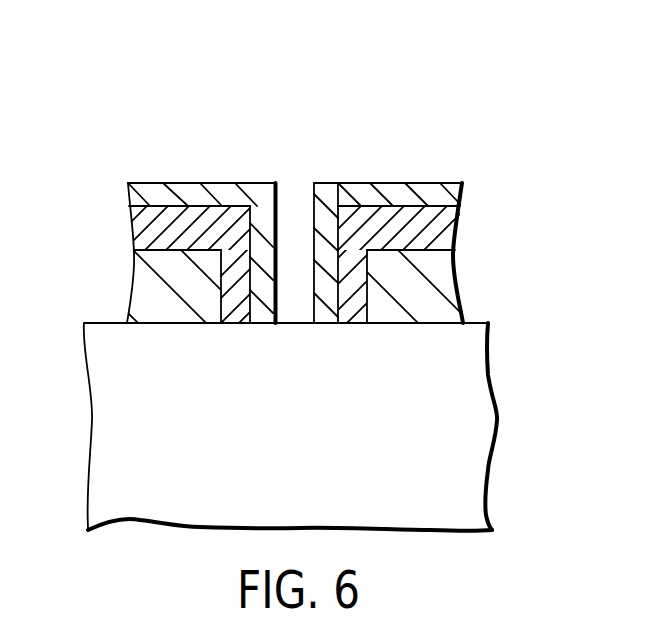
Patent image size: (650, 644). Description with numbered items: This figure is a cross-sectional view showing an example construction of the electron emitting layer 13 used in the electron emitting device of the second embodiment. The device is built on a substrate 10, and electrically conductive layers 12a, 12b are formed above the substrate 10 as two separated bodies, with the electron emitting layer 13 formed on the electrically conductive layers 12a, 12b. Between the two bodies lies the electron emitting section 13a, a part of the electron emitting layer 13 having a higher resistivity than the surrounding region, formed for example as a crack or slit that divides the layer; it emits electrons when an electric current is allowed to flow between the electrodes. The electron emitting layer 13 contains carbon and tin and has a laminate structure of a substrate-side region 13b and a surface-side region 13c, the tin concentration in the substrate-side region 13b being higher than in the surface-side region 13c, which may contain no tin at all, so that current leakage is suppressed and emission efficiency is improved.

The substrate 10 is at (465, 467).
The electrically conductive layer 12a is at (140, 292).
The electrically conductive layer 12b is at (447, 280).
The electron emitting layer 13 is at (393, 132).
The electron emitting section 13a is at (288, 200).
The substrate-side region 13b is at (214, 214).
The surface-side region 13c is at (361, 195).